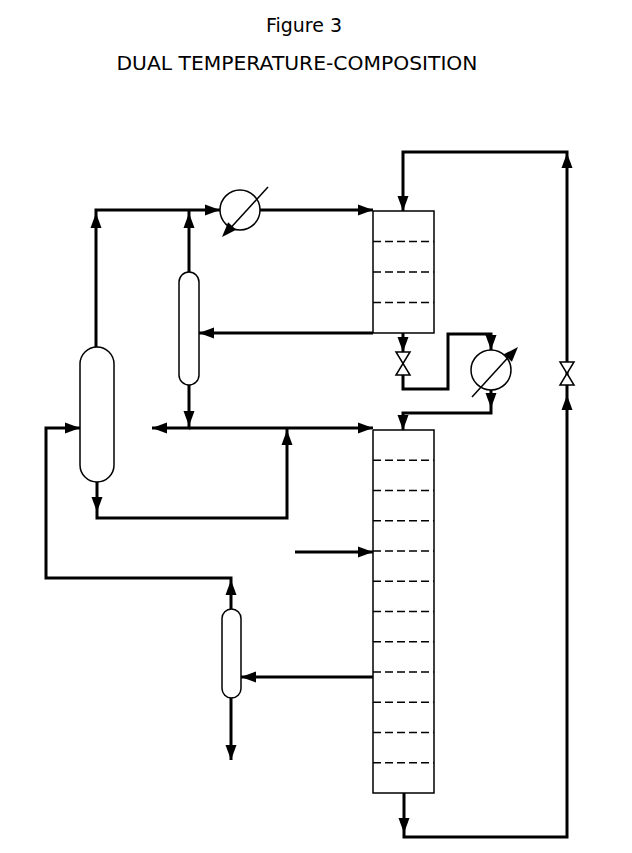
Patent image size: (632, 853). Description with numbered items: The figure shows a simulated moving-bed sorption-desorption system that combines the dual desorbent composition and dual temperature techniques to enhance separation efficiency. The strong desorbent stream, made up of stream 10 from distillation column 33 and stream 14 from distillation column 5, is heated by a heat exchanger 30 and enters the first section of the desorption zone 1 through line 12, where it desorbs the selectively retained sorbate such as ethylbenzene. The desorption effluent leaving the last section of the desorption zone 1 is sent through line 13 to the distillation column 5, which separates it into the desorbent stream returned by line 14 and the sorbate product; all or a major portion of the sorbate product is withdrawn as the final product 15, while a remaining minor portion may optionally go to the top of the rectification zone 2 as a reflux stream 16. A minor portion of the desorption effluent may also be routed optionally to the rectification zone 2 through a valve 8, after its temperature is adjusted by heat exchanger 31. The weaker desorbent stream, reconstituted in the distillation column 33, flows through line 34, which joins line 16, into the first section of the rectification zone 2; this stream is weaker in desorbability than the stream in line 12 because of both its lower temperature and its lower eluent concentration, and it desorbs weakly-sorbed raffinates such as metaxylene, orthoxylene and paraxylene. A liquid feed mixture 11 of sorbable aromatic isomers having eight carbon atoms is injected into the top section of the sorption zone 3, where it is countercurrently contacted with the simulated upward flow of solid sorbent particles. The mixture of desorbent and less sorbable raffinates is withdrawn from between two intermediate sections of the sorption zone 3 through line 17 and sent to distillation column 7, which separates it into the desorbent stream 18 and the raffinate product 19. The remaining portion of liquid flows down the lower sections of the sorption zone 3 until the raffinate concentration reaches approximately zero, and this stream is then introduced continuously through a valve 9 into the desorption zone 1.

The desorption zone 1 is at (434, 262).
The rectification zone 2 is at (434, 483).
The sorption zone 3 is at (434, 631).
The distillation column 5 is at (199, 305).
The distillation column 7 is at (241, 633).
The valve 8 is at (396, 366).
The valve 9 is at (574, 375).
The stream 10 is at (104, 258).
The liquid feed mixture 11 is at (326, 539).
The line 12 is at (323, 188).
The line 13 is at (294, 314).
The line 14 is at (189, 251).
The final product 15 is at (161, 413).
The reflux stream 16 is at (263, 427).
The line 17 is at (321, 657).
The desorbent stream 18 is at (161, 562).
The raffinate product 19 is at (232, 741).
The heat exchanger 30 is at (246, 175).
The heat exchanger 31 is at (500, 385).
The distillation column 33 is at (114, 383).
The line 34 is at (216, 497).